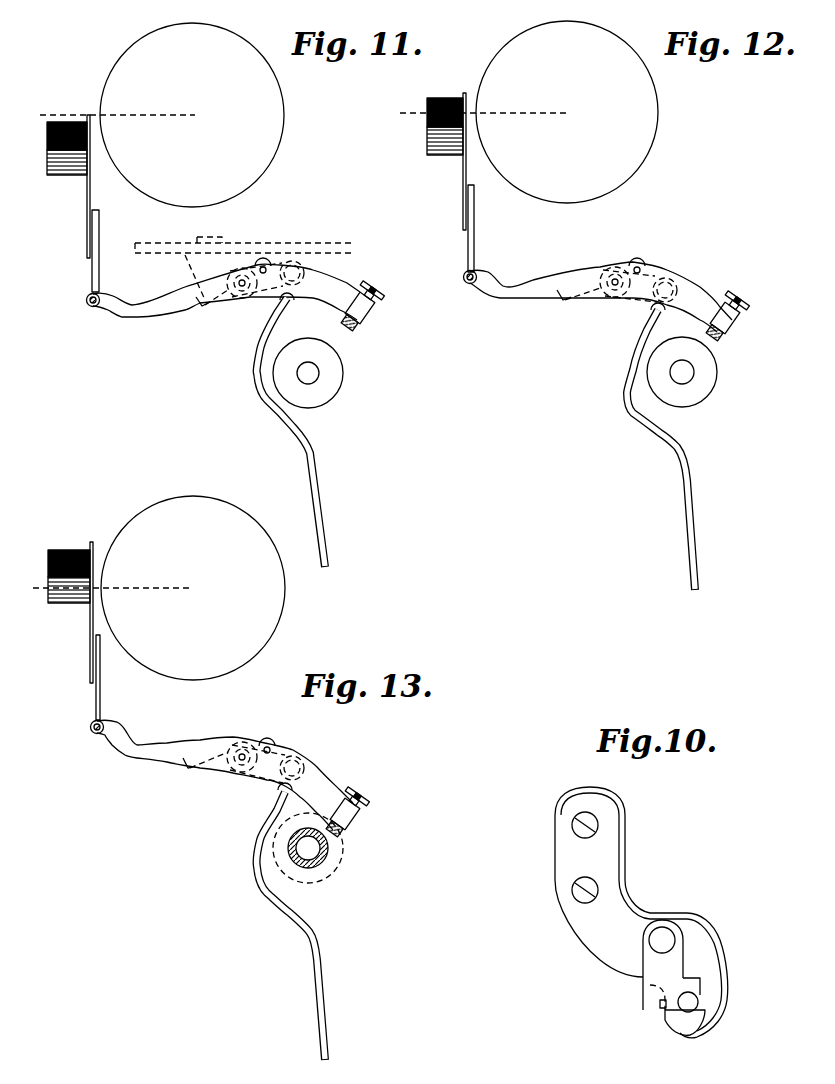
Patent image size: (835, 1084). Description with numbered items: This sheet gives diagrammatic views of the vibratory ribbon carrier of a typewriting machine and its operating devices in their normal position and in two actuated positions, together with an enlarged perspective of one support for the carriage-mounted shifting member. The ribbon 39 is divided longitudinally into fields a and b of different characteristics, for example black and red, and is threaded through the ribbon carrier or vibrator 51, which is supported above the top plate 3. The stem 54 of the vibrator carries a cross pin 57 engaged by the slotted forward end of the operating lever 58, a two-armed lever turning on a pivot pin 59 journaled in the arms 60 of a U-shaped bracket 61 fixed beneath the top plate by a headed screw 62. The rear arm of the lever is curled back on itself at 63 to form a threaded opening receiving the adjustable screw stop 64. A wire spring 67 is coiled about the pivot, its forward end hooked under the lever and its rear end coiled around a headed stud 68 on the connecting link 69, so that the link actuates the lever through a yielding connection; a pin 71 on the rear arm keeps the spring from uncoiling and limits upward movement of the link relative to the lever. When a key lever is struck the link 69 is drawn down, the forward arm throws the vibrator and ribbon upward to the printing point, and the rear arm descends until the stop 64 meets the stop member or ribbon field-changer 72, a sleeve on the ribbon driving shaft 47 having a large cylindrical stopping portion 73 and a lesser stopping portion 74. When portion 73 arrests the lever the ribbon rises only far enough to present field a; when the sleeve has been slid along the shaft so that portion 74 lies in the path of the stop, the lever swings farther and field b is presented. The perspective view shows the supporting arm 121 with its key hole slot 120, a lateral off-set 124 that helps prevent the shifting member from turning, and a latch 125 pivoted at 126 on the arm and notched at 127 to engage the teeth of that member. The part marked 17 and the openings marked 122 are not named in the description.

In FIG. 11, the top plate 3 is at (323, 243).
In FIG. 11, the sprocket wheel 17 is at (284, 117).
In FIG. 12, the sprocket wheel 17 is at (656, 115).
In FIG. 13, the sprocket wheel 17 is at (278, 604).
In FIG. 11, the ribbon 39 is at (48, 158).
In FIG. 12, the ribbon 39 is at (427, 141).
In FIG. 13, the ribbon 39 is at (48, 568).
In FIG. 11, the ribbon field a is at (48, 130).
In FIG. 12, the ribbon field a is at (441, 98).
In FIG. 13, the ribbon field a is at (69, 550).
In FIG. 11, the ribbon field b is at (63, 174).
In FIG. 12, the ribbon field b is at (441, 155).
In FIG. 13, the ribbon field b is at (68, 603).
In FIG. 11, the driving shaft 47 is at (297, 373).
In FIG. 12, the driving shaft 47 is at (670, 372).
In FIG. 11, the vibratory ribbon carrier 51 is at (87, 210).
In FIG. 12, the vibratory ribbon carrier 51 is at (463, 205).
In FIG. 13, the vibratory ribbon carrier 51 is at (90, 650).
In FIG. 11, the stem 54 is at (99, 278).
In FIG. 12, the stem 54 is at (474, 250).
In FIG. 13, the stem 54 is at (100, 700).
In FIG. 11, the cross pin 57 is at (87, 302).
In FIG. 12, the cross pin 57 is at (464, 280).
In FIG. 13, the cross pin 57 is at (91, 727).
In FIG. 11, the operating lever 58 is at (172, 318).
In FIG. 12, the operating lever 58 is at (528, 298).
In FIG. 13, the operating lever 58 is at (172, 762).
In FIG. 11, the pivot pin 59 is at (242, 286).
In FIG. 12, the pivot pin 59 is at (614, 286).
In FIG. 13, the pivot pin 59 is at (243, 754).
In FIG. 11, the bracket arms 60 is at (185, 272).
In FIG. 11, the U-shaped bracket 61 is at (187, 253).
In FIG. 11, the headed screw 62 is at (210, 238).
In FIG. 11, the curled end 63 is at (372, 318).
In FIG. 12, the curled end 63 is at (738, 328).
In FIG. 13, the curled end 63 is at (357, 826).
In FIG. 11, the screw stop 64 is at (352, 328).
In FIG. 12, the screw stop 64 is at (716, 338).
In FIG. 13, the screw stop 64 is at (335, 838).
In FIG. 11, the wire spring 67 is at (203, 308).
In FIG. 12, the wire spring 67 is at (570, 304).
In FIG. 13, the wire spring 67 is at (191, 770).
In FIG. 11, the headed stud 68 is at (306, 272).
In FIG. 12, the headed stud 68 is at (676, 282).
In FIG. 13, the headed stud 68 is at (300, 762).
In FIG. 11, the connecting link 69 is at (314, 478).
In FIG. 12, the connecting link 69 is at (689, 503).
In FIG. 13, the connecting link 69 is at (320, 985).
In FIG. 11, the pin 71 is at (266, 266).
In FIG. 12, the pin 71 is at (641, 268).
In FIG. 13, the pin 71 is at (270, 748).
In FIG. 11, the stop member 72 is at (337, 423).
In FIG. 12, the stop member 72 is at (699, 418).
In FIG. 13, the stop member 72 is at (329, 899).
In FIG. 11, the large stopping portion 73 is at (343, 383).
In FIG. 12, the large stopping portion 73 is at (717, 380).
In FIG. 13, the large stopping portion 73 is at (338, 870).
In FIG. 13, the lesser stopping portion 74 is at (328, 852).
In FIG. 10, the key hole slot 120 is at (698, 1002).
In FIG. 10, the supporting arm 121 is at (608, 862).
In FIG. 10, the mounting holes 122 is at (590, 838).
In FIG. 10, the lateral off-set 124 is at (672, 1022).
In FIG. 10, the latch 125 is at (650, 988).
In FIG. 10, the latch pivot 126 is at (663, 928).
In FIG. 10, the notch 127 is at (660, 1007).